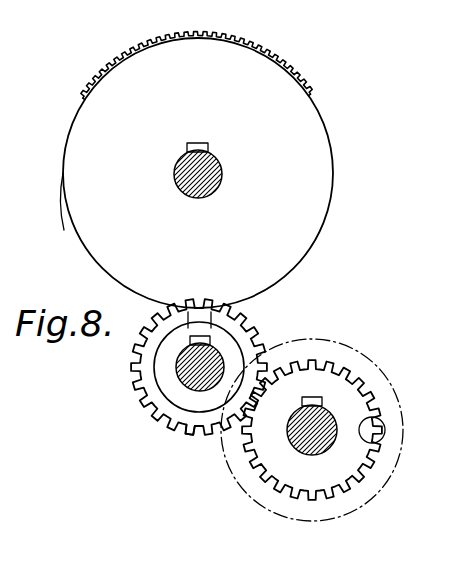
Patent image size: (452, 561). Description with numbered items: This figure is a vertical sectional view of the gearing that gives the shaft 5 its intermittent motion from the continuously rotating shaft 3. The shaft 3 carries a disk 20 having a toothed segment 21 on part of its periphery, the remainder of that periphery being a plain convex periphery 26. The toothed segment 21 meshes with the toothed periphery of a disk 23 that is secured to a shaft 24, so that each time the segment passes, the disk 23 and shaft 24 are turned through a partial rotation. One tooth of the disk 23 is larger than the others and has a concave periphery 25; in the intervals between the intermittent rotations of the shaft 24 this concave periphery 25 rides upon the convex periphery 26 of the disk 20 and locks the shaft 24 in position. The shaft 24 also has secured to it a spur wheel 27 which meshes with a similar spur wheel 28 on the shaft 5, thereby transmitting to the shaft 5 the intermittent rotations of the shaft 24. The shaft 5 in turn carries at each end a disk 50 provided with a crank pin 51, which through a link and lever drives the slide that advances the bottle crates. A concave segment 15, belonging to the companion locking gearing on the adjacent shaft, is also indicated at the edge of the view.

The disk 20 is at (198, 173).
The toothed segment 21 is at (196, 66).
The shaft 3 is at (210, 172).
The convex periphery 26 is at (69, 226).
The concave segment 15 is at (438, 255).
The disk 23 is at (176, 396).
The shaft 24 is at (211, 360).
The concave periphery 25 is at (199, 321).
The spur wheel 27 is at (206, 432).
The spur wheel 28 is at (312, 430).
The shaft 5 is at (310, 430).
The disk 50 is at (366, 370).
The crank pin 51 is at (380, 430).